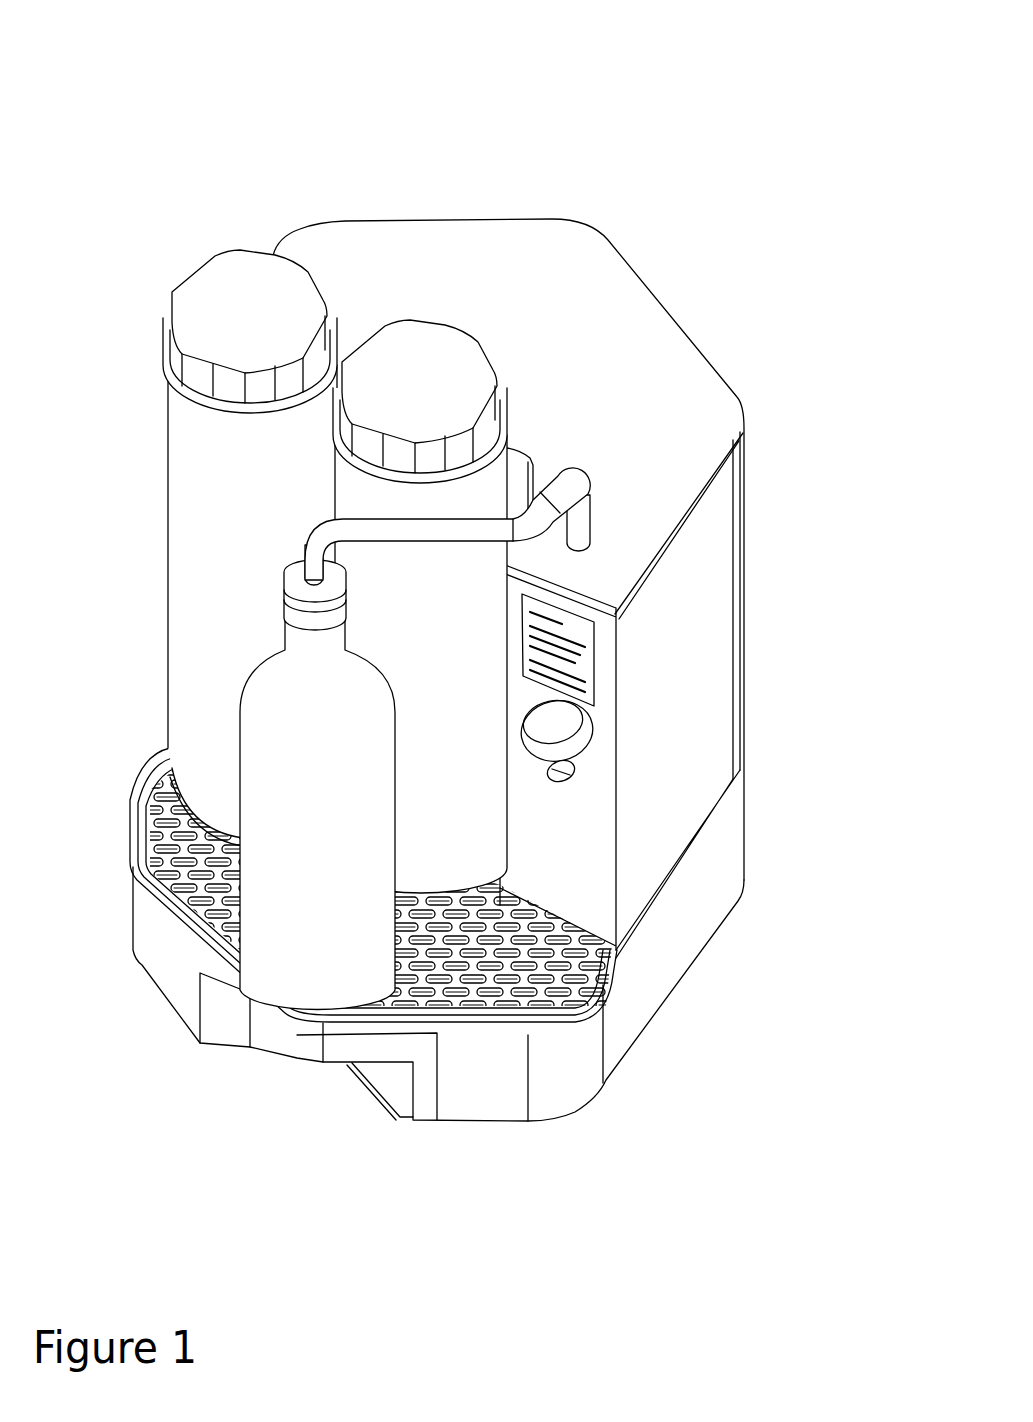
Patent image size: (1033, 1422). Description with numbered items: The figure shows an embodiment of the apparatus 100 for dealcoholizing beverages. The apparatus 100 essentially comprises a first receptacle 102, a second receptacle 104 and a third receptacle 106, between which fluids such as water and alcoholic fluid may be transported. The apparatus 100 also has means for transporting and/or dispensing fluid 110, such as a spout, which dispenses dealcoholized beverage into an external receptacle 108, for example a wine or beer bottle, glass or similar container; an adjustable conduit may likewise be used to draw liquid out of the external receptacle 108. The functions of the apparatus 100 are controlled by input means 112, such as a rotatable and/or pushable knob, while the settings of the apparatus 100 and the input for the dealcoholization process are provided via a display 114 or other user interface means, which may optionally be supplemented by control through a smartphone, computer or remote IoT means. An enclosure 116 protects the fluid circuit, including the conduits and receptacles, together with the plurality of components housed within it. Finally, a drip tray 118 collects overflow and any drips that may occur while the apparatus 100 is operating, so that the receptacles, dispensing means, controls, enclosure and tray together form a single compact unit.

The apparatus 100 is at (181, 29).
The first receptacle 102 is at (180, 467).
The second receptacle 104 is at (490, 477).
The third receptacle 106 is at (280, 1045).
The external receptacle 108 is at (262, 827).
The means for transporting and/or dispensing fluid 110 is at (553, 497).
The input means 112 is at (567, 747).
The display 114 is at (578, 657).
The enclosure 116 is at (388, 247).
The drip tray 118 is at (535, 978).